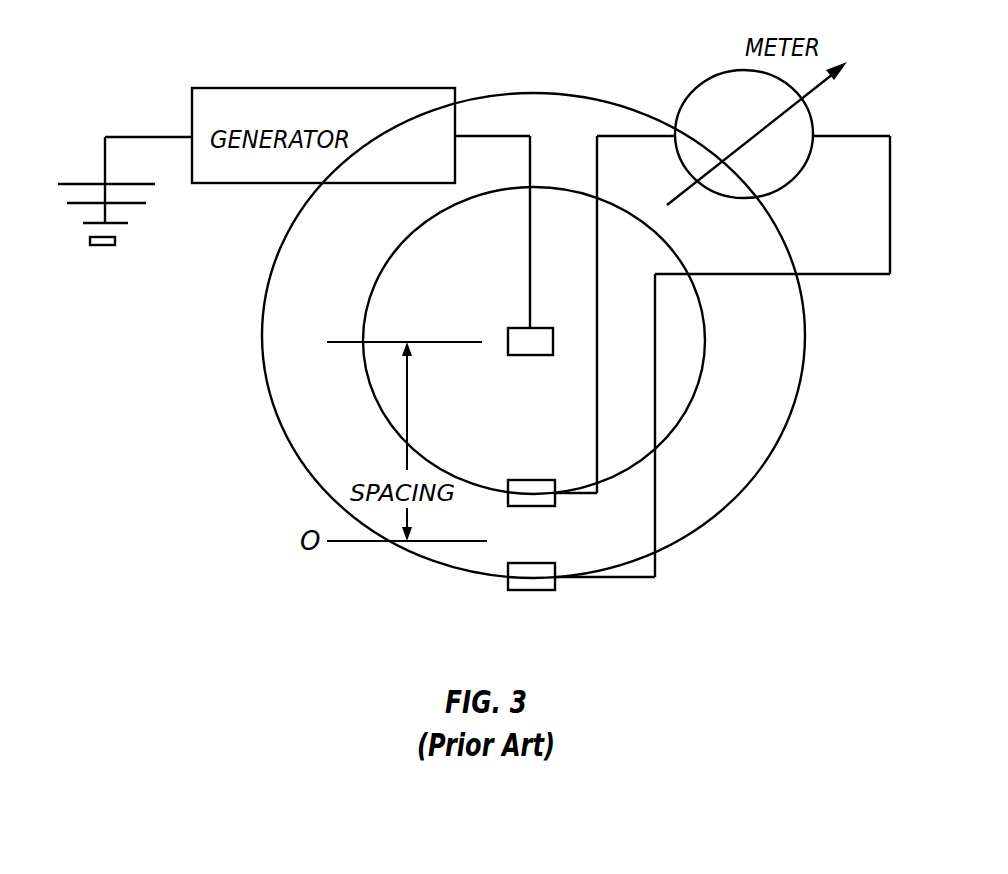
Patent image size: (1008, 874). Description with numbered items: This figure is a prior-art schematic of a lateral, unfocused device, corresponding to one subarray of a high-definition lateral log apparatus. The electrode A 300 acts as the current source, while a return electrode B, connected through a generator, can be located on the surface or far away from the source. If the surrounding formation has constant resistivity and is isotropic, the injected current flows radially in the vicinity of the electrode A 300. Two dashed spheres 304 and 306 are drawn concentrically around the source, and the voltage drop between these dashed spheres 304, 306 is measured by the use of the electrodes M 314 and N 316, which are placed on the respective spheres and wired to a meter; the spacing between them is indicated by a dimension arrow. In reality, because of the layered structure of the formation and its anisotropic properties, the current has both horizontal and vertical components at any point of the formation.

The electrode A 300 is at (517, 328).
The dashed sphere 304 is at (705, 350).
The dashed sphere 306 is at (795, 412).
The electrode M 314 is at (540, 507).
The electrode N 316 is at (508, 585).